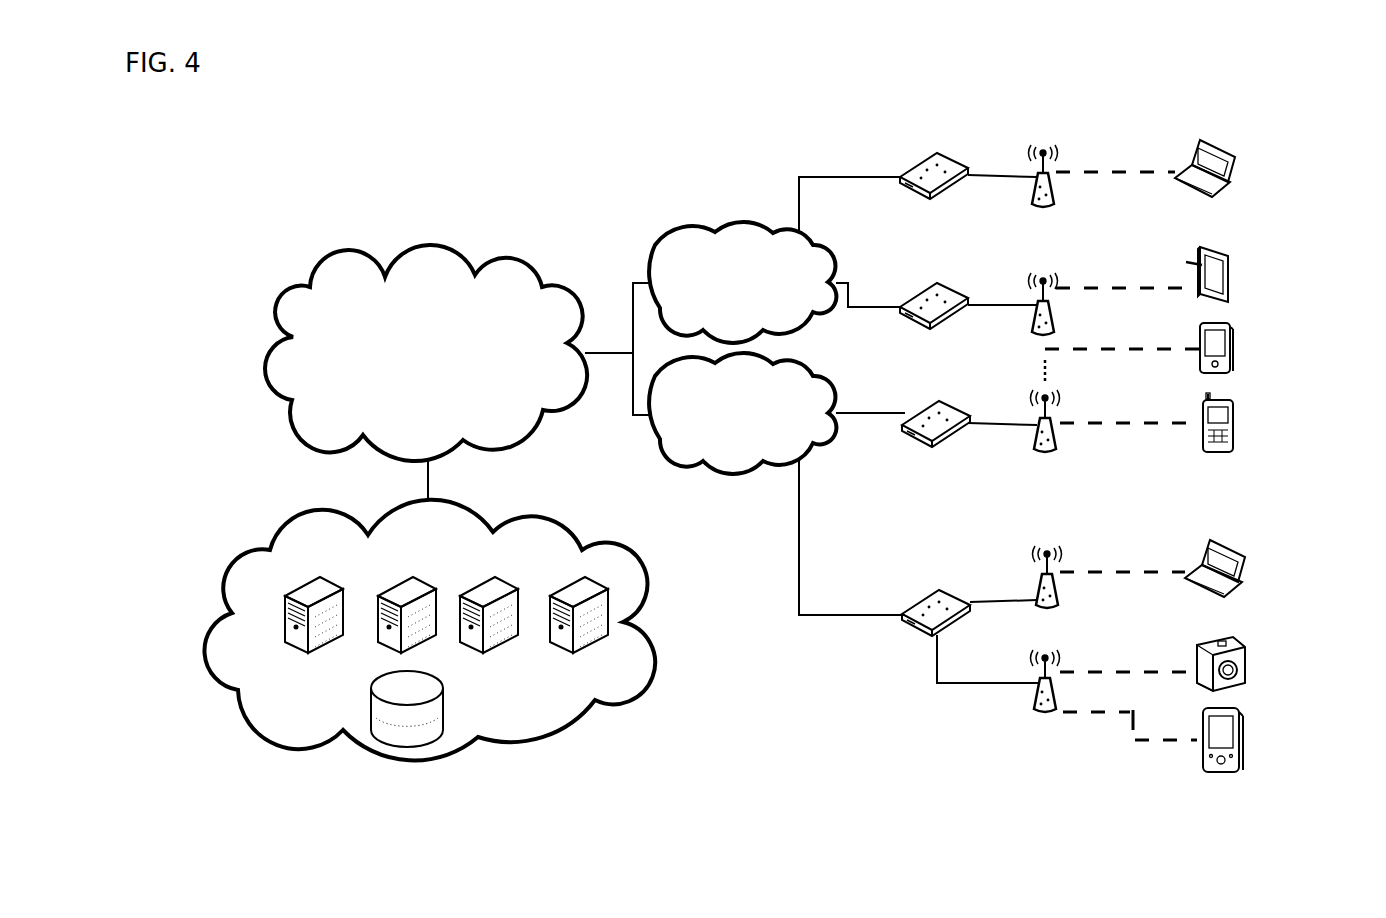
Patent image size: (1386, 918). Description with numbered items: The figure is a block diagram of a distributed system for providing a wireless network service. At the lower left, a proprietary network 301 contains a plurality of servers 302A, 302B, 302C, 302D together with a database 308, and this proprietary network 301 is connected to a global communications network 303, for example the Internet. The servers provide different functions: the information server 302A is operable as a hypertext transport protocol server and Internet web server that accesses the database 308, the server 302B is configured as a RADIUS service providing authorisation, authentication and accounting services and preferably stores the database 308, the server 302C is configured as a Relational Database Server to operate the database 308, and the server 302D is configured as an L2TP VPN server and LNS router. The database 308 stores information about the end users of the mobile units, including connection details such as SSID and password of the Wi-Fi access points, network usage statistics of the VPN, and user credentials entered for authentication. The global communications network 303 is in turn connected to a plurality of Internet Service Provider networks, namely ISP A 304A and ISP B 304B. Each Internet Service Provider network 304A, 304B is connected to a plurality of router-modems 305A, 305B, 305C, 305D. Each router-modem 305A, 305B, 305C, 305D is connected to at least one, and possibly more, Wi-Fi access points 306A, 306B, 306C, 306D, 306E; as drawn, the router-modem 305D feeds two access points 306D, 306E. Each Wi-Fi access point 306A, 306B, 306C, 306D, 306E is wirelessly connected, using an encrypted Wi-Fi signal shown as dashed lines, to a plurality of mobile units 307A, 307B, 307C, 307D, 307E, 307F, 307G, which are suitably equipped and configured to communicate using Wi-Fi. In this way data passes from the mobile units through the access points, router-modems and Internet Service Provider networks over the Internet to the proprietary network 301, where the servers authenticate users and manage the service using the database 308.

The proprietary network 301 is at (207, 667).
The information server 302A is at (295, 648).
The server 302B is at (383, 645).
The server 302C is at (490, 650).
The server 302D is at (573, 650).
The global communications network 303 is at (345, 252).
The Internet Service Provider network 304A is at (660, 242).
The Internet Service Provider network 304B is at (713, 472).
The router-modem 305A is at (934, 152).
The router-modem 305B is at (930, 285).
The router-modem 305C is at (930, 452).
The router-modem 305D is at (940, 588).
The Wi-Fi access point 306A is at (1042, 148).
The Wi-Fi access point 306B is at (1043, 283).
The Wi-Fi access point 306C is at (1045, 455).
The Wi-Fi access point 306D is at (1045, 553).
The Wi-Fi access point 306E is at (1052, 712).
The mobile unit 307A is at (1233, 155).
The mobile unit 307B is at (1228, 257).
The mobile unit 307C is at (1233, 350).
The mobile unit 307D is at (1235, 427).
The mobile unit 307E is at (1243, 556).
The mobile unit 307F is at (1245, 667).
The mobile unit 307G is at (1245, 738).
The database 308 is at (407, 747).